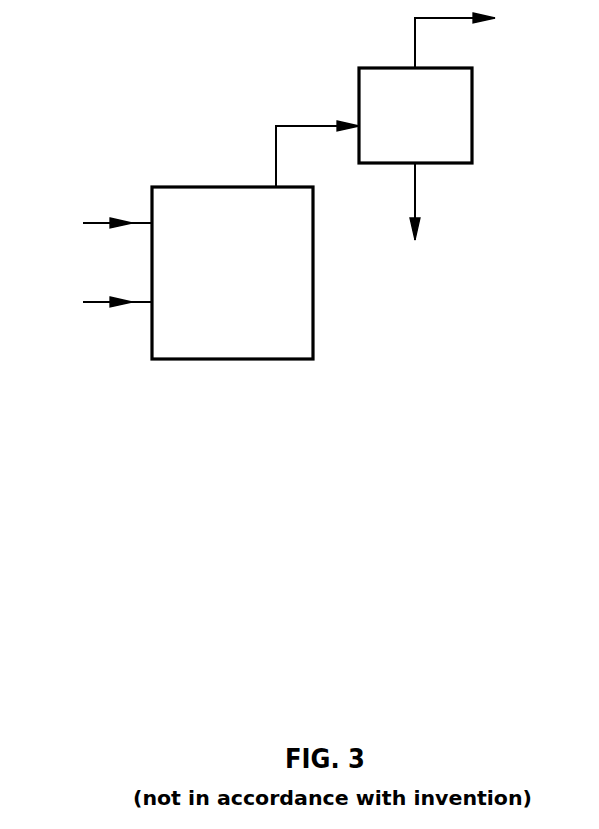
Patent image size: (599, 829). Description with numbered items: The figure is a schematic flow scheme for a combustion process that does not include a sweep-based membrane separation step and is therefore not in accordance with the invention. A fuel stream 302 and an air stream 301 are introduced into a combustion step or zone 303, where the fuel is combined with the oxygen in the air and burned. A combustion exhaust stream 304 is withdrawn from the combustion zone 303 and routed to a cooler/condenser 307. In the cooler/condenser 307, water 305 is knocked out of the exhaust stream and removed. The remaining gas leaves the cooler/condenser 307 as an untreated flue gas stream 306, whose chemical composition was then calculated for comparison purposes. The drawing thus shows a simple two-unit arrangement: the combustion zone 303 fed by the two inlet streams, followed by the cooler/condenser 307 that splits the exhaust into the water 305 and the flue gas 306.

The air stream 301 is at (93, 304).
The fuel stream 302 is at (93, 224).
The combustion step or zone 303 is at (189, 187).
The combustion exhaust stream 304 is at (317, 143).
The water 305 is at (415, 220).
The untreated flue gas stream 306 is at (476, 37).
The cooler/condenser 307 is at (472, 115).